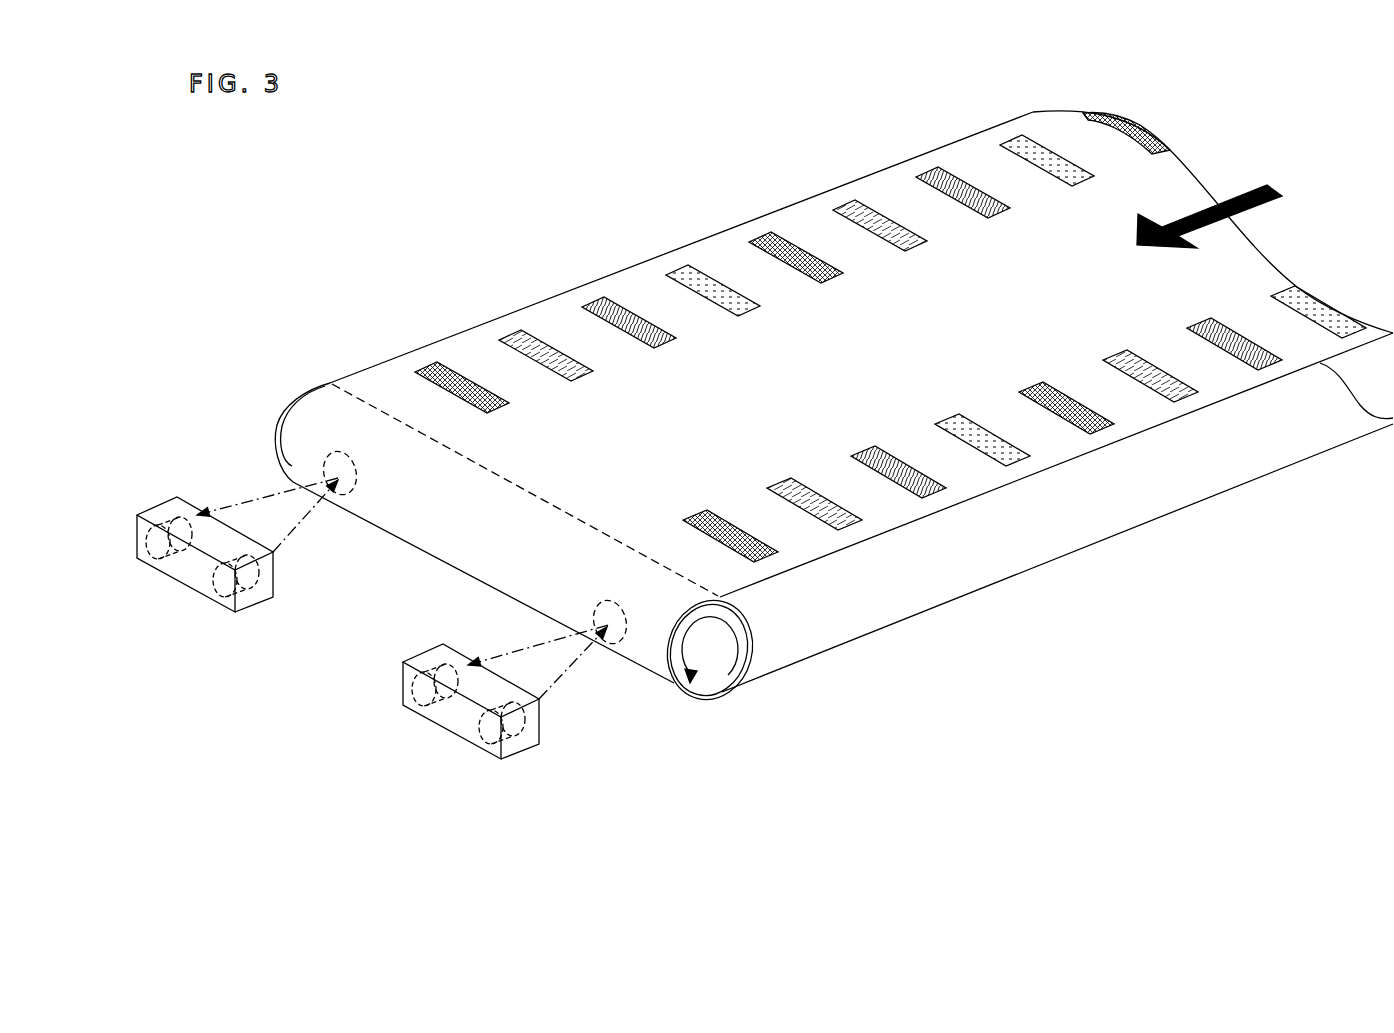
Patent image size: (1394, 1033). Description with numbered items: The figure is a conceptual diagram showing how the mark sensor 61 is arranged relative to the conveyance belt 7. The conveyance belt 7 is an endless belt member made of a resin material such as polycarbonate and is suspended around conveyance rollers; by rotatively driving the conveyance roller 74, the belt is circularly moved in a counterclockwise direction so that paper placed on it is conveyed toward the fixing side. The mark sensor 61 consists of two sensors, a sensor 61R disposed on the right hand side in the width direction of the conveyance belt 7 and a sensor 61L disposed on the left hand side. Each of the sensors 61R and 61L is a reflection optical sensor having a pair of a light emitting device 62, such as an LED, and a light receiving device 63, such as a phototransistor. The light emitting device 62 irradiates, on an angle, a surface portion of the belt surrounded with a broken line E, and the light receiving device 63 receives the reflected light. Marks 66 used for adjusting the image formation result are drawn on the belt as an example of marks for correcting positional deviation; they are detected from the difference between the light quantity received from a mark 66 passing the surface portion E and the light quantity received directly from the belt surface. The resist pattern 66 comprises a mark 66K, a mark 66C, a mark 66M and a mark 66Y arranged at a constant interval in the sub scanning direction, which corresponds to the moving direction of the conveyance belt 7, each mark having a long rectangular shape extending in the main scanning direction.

The conveyance belt 7 is at (593, 287).
The marks (resist pattern) 66 is at (880, 397).
The mark formed by the black process section 66K is at (442, 363).
The mark formed by the cyan process section 66C is at (862, 518).
The mark formed by the magenta process section 66M is at (947, 487).
The mark formed by the yellow process section 66Y is at (1016, 368).
The conveyance roller 74 is at (707, 682).
The surface portion surrounded with a broken line E is at (323, 465).
The mark sensor 61 is at (360, 639).
The sensor disposed on the right hand side 61R is at (257, 610).
The sensor disposed on the left hand side 61L is at (403, 673).
The light emitting device 62 is at (308, 732).
The light receiving device 63 is at (143, 563).